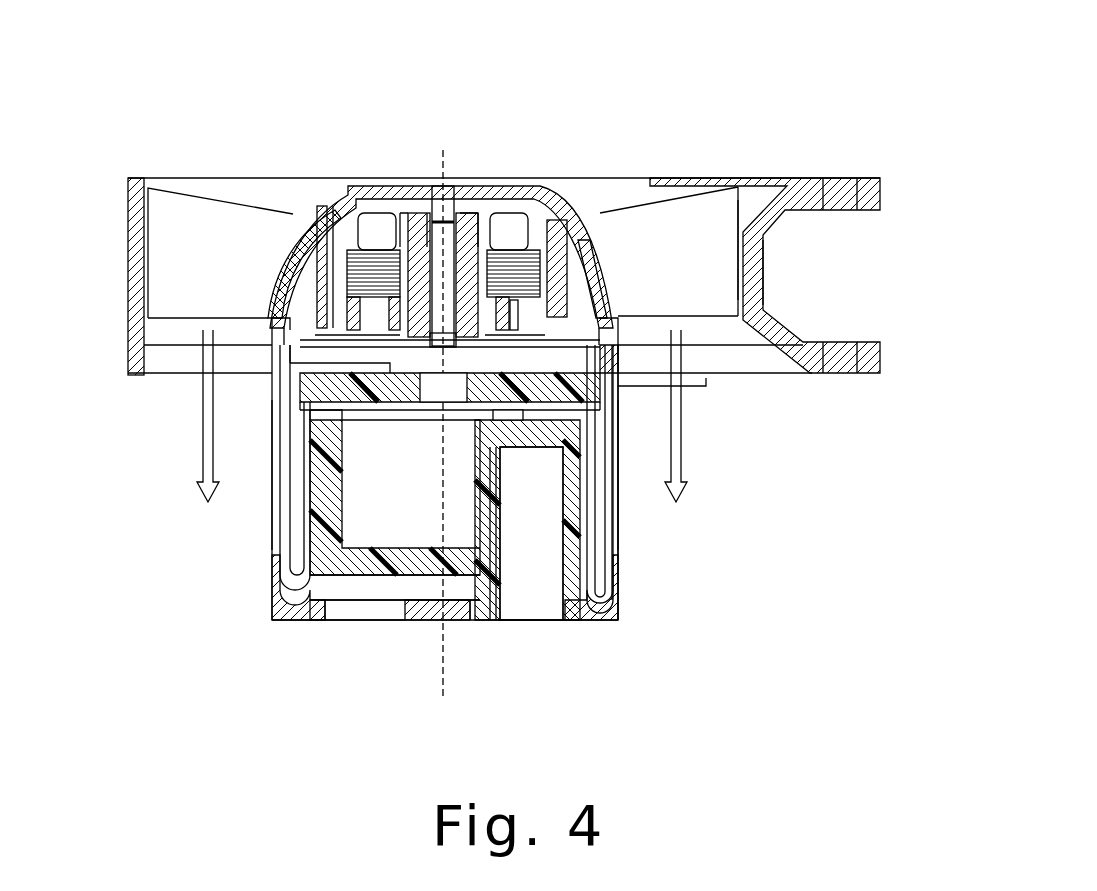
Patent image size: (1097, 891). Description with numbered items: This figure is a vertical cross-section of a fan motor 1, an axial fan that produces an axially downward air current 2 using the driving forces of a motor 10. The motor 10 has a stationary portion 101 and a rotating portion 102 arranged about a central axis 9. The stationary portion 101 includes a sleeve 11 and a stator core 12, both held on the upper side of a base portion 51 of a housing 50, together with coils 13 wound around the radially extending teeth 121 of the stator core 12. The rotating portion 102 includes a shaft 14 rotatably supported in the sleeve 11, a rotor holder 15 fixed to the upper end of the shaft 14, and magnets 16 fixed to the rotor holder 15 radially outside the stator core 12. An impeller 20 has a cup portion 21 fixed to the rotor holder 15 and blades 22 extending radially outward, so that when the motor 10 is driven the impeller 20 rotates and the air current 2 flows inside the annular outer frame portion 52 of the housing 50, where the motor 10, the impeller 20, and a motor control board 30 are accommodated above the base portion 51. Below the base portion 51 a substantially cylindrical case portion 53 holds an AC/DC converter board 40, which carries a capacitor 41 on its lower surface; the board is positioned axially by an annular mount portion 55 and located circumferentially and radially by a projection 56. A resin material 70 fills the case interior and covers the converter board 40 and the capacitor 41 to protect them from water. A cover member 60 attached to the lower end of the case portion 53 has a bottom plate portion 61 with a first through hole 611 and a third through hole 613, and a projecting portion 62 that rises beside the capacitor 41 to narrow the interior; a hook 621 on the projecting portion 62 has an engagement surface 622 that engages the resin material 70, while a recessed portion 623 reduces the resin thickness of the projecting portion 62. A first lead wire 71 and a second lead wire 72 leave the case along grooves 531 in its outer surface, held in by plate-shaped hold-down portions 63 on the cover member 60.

The fan motor 1 is at (300, 120).
The air current 2 is at (203, 422).
The central axis 9 is at (440, 170).
The motor 10 is at (590, 102).
The stationary portion 101 is at (504, 198).
The rotating portion 102 is at (540, 190).
The sleeve 11 is at (468, 205).
The stator core 12 is at (383, 125).
The teeth 121 is at (372, 200).
The coils 13 is at (338, 196).
The shaft 14 is at (452, 205).
The rotor holder 15 is at (624, 190).
The magnets 16 is at (590, 190).
The impeller 20 is at (746, 122).
The cup portion 21 is at (668, 185).
The blades 22 is at (722, 190).
The motor control board 30 is at (318, 300).
The AC/DC converter board 40 is at (372, 412).
The capacitor 41 is at (373, 592).
The housing 50 is at (800, 318).
The base portion 51 is at (612, 386).
The outer frame portion 52 is at (757, 252).
The case portion 53 is at (604, 466).
The grooves 531 is at (270, 528).
The mount portion 55 is at (300, 378).
The projection 56 is at (300, 404).
The cover member 60 is at (600, 624).
The bottom plate portion 61 is at (454, 608).
The first through hole 611 is at (388, 606).
The third through hole 613 is at (476, 606).
The projecting portion 62 is at (540, 604).
The hook 621 is at (494, 456).
The engagement surface 622 is at (504, 478).
The recessed portion 623 is at (542, 604).
The hold-down portions 63 is at (280, 566).
The resin material 70 is at (334, 608).
The first lead wire 71 is at (604, 510).
The second lead wire 72 is at (285, 500).